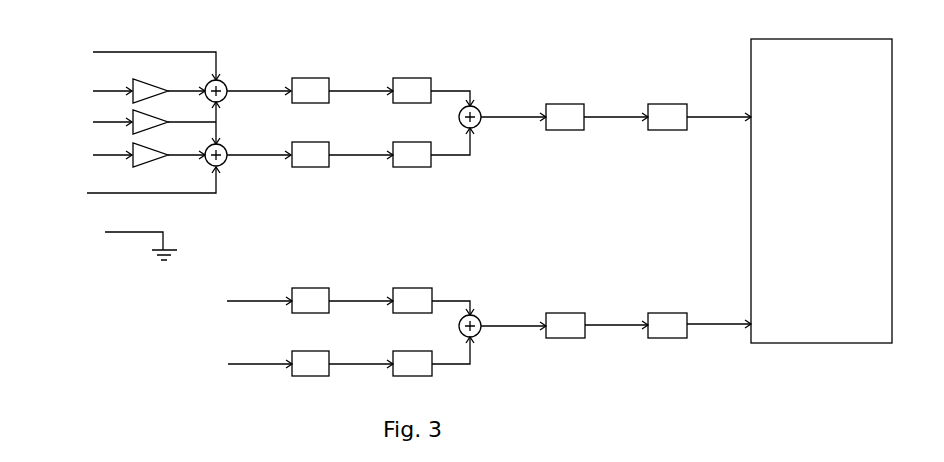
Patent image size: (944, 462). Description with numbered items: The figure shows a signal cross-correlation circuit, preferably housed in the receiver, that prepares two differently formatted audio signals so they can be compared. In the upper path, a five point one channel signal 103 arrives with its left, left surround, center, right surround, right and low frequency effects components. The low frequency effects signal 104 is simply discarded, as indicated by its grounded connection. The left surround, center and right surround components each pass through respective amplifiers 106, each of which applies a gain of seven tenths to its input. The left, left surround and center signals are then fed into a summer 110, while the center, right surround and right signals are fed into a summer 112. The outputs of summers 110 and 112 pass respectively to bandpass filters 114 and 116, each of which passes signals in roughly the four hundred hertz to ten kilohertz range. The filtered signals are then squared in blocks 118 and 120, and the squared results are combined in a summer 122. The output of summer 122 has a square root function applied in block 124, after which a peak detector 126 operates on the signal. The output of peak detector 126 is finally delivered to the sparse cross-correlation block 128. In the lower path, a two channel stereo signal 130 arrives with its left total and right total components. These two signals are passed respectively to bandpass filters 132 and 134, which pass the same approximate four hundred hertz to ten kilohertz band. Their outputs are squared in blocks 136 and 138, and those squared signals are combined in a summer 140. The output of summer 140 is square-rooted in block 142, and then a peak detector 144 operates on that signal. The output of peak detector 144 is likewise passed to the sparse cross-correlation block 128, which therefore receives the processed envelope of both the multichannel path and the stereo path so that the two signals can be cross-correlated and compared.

The 5.1 channel signal 103 is at (42, 119).
The LFE signal 104 is at (80, 246).
The amplifiers 106 is at (152, 65).
The summer 110 is at (238, 78).
The summer 112 is at (238, 162).
The bandpass filter 114 is at (305, 78).
The bandpass filter 116 is at (305, 167).
The squaring block 118 is at (406, 78).
The squaring block 120 is at (406, 167).
The summer 122 is at (476, 106).
The square root block 124 is at (558, 104).
The peak detector 126 is at (657, 104).
The sparse cross-correlation block 128 is at (751, 222).
The two channel stereo signal 130 is at (158, 325).
The bandpass filter 132 is at (323, 288).
The bandpass filter 134 is at (316, 376).
The squaring block 136 is at (406, 288).
The squaring block 138 is at (406, 376).
The summer 140 is at (477, 318).
The square root block 142 is at (556, 313).
The peak detector 144 is at (657, 338).